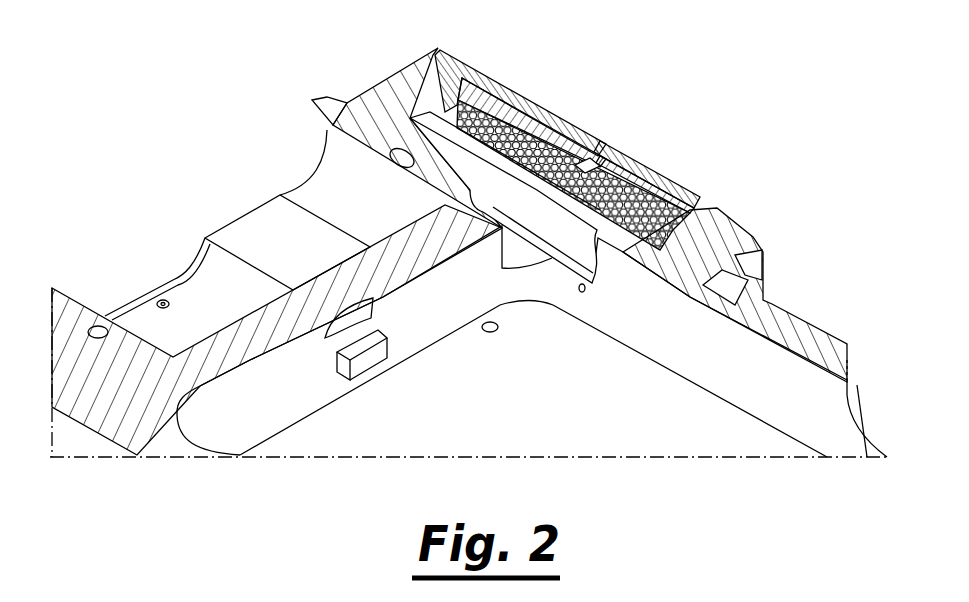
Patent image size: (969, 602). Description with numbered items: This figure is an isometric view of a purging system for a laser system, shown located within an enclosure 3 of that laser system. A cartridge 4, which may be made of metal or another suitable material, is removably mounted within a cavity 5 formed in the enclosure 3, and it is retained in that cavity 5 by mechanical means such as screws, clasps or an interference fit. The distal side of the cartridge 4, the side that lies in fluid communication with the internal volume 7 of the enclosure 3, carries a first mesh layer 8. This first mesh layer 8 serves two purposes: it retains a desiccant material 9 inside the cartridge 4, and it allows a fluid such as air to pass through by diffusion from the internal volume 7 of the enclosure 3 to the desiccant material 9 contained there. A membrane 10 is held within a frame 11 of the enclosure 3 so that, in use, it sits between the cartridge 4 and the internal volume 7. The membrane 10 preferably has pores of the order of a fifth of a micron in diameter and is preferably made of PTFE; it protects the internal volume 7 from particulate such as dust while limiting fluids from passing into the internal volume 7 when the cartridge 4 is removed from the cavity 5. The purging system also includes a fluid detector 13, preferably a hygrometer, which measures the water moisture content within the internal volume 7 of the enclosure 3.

The enclosure 3 is at (383, 102).
The cartridge 4 is at (497, 86).
The cavity 5 is at (738, 192).
The internal volume 7 is at (487, 277).
The first mesh layer 8 is at (557, 147).
The desiccant material 9 is at (520, 123).
The membrane 10 is at (595, 187).
The frame 11 is at (697, 197).
The fluid detector 13 is at (358, 365).